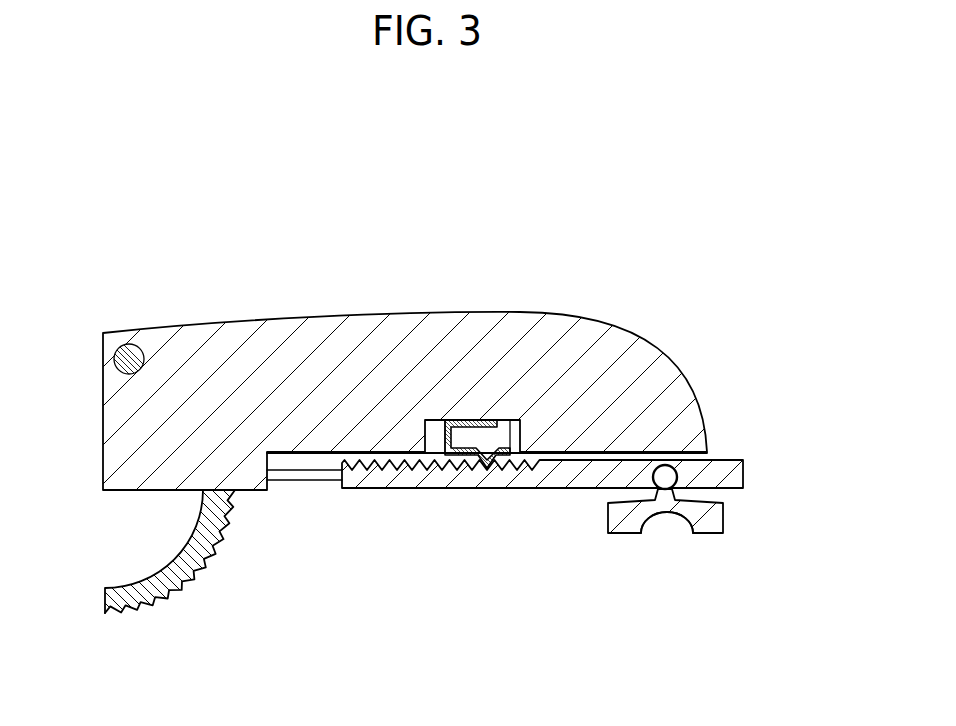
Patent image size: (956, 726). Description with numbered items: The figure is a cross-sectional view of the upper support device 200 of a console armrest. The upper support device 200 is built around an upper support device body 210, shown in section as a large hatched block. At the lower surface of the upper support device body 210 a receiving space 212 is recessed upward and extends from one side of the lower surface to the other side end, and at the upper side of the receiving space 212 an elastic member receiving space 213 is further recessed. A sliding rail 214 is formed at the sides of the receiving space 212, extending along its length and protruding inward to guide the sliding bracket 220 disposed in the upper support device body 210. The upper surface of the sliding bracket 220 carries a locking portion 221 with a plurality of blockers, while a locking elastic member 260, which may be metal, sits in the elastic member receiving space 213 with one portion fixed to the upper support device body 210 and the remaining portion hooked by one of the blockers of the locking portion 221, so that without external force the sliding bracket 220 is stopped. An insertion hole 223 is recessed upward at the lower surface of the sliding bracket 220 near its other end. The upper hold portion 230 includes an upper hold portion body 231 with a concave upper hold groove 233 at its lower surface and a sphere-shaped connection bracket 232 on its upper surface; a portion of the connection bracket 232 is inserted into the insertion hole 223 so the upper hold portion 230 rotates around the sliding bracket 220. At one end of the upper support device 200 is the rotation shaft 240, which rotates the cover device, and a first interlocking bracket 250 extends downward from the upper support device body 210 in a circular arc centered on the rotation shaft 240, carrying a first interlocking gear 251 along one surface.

The upper support device 200 is at (436, 344).
The upper support device body 210 is at (296, 340).
The receiving space 212 is at (707, 453).
The elastic member receiving space 213 is at (512, 437).
The sliding rail 214 is at (302, 481).
The sliding bracket 220 is at (530, 520).
The locking portion 221 is at (416, 482).
The insertion hole 223 is at (697, 394).
The upper hold portion 230 is at (669, 552).
The upper hold portion body 231 is at (723, 514).
The connection bracket 232 is at (677, 480).
The upper hold groove 233 is at (674, 526).
The rotation shaft 240 is at (125, 345).
The first interlocking bracket 250 is at (227, 550).
The first interlocking gear 251 is at (167, 600).
The locking elastic member 260 is at (453, 421).